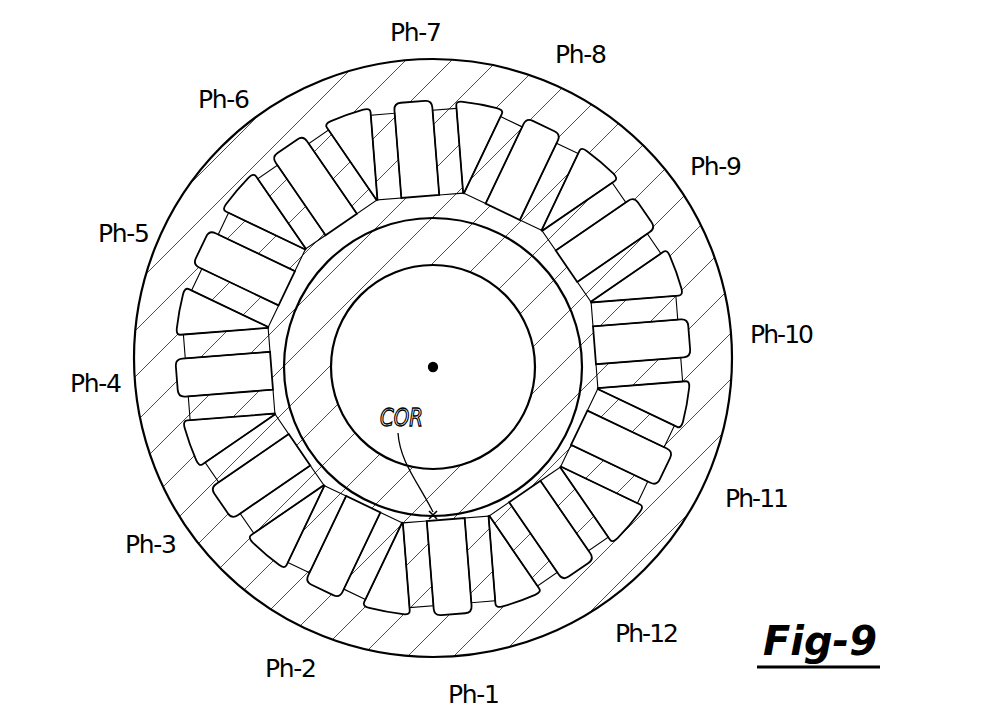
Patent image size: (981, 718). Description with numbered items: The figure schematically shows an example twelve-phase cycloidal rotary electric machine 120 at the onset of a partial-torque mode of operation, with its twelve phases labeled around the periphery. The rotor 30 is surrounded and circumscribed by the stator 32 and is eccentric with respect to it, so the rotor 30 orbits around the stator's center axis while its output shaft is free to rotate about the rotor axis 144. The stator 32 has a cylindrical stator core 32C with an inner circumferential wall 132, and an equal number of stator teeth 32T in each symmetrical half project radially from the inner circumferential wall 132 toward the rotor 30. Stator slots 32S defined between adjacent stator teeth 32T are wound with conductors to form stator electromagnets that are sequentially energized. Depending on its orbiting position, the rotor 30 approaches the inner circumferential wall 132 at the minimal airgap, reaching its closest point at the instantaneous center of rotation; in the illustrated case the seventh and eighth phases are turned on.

The twelve-phase rotary electric machine 120 is at (749, 47).
The stator 32 is at (746, 398).
The stator core 32C is at (715, 253).
The stator slots 32S is at (474, 122).
The stator teeth 32T is at (353, 537).
The inner circumferential wall 132 is at (352, 122).
The rotor 30 is at (303, 347).
The rotor axis 144 is at (433, 367).